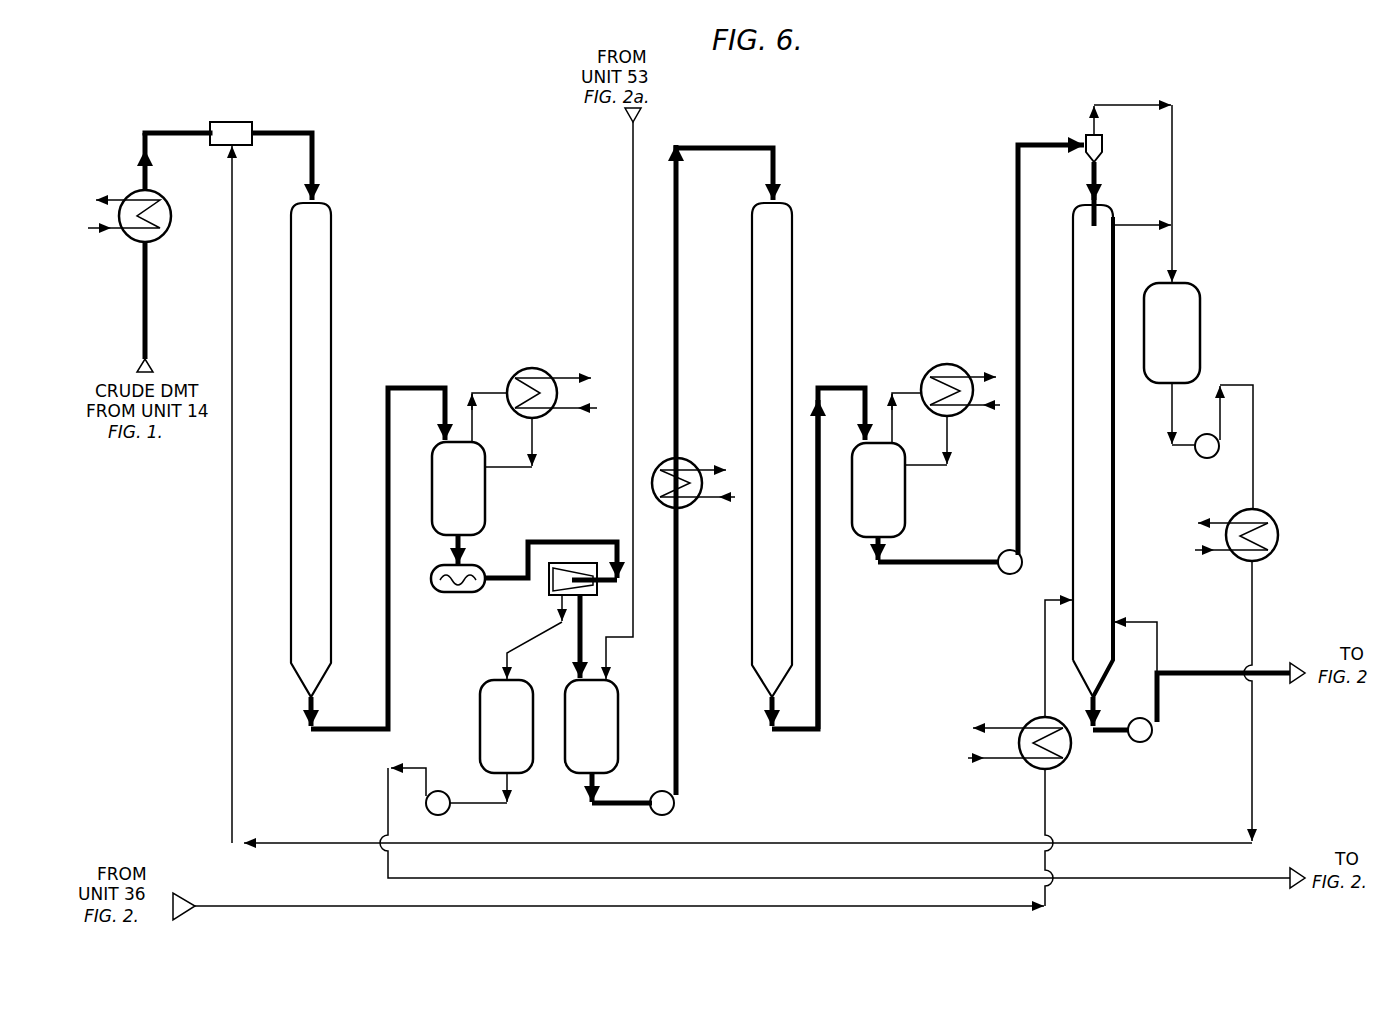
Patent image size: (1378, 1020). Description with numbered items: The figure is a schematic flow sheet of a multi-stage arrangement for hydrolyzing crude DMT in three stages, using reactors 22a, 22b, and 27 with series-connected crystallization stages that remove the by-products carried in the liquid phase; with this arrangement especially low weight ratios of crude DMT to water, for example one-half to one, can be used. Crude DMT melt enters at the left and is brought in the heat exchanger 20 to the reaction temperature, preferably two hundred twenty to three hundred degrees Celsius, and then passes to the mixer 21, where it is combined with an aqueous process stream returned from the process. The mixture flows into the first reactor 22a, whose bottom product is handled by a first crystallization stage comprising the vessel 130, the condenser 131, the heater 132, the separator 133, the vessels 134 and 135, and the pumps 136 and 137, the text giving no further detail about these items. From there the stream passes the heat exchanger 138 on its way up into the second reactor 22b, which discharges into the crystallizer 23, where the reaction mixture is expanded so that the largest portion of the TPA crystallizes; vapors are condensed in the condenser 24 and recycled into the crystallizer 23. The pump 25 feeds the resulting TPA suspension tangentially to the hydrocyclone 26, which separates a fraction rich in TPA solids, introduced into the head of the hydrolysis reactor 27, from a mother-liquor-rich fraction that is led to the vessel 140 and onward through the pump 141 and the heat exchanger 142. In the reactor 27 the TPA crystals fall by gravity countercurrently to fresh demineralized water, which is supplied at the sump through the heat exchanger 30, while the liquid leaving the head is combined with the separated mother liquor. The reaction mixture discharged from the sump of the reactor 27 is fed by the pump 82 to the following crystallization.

The heat exchanger 20 is at (165, 233).
The mixer 21 is at (240, 122).
The reactor 22a is at (331, 308).
The reactor 22b is at (752, 308).
The crystallizer 23 is at (905, 494).
The condenser 24 is at (940, 368).
The pump 25 is at (1000, 575).
The hydrocyclone 26 is at (1103, 145).
The hydrolysis reactor 27 is at (1113, 505).
The heat exchanger 30 is at (1038, 770).
The pump 82 is at (1150, 740).
The receiver vessel 130 is at (485, 494).
The condenser 131 is at (516, 372).
The heater 132 is at (445, 592).
The separator 133 is at (548, 588).
The vessel 134 is at (480, 720).
The vessel 135 is at (618, 726).
The pump 136 is at (443, 814).
The pump 137 is at (650, 813).
The heat exchanger 138 is at (689, 505).
The vessel 140 is at (1200, 332).
The pump 141 is at (1213, 458).
The heat exchanger 142 is at (1262, 518).